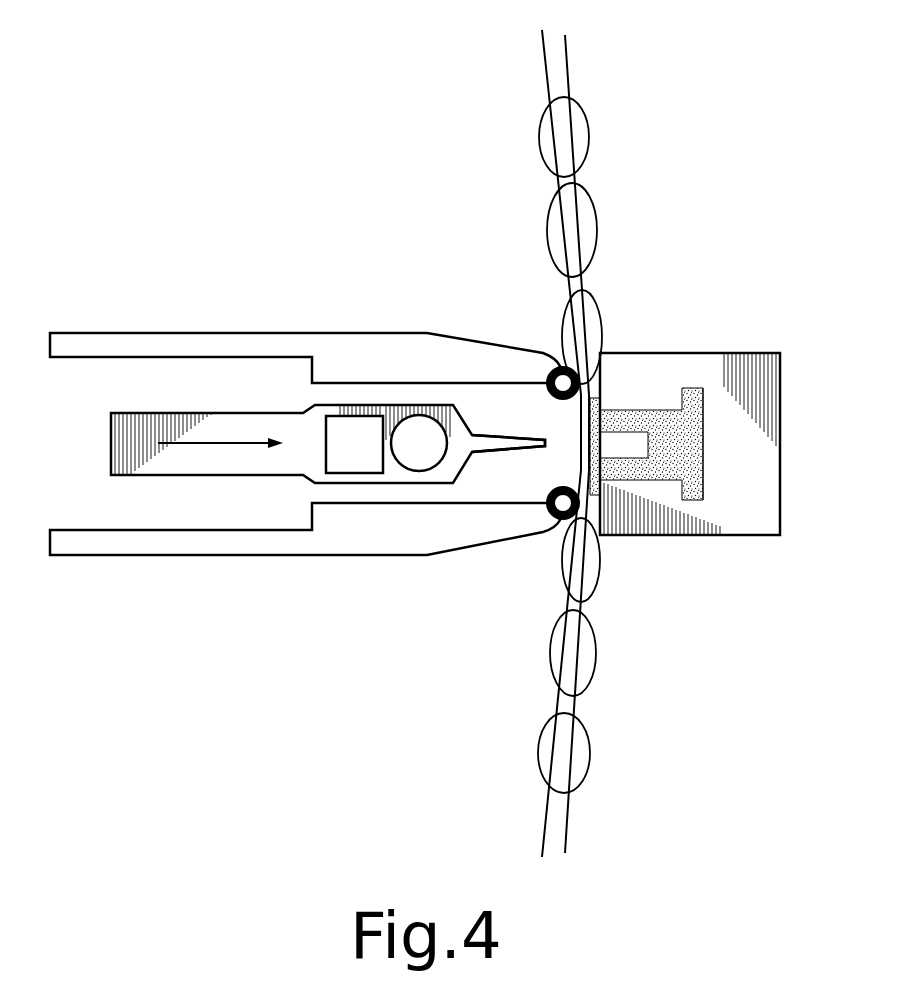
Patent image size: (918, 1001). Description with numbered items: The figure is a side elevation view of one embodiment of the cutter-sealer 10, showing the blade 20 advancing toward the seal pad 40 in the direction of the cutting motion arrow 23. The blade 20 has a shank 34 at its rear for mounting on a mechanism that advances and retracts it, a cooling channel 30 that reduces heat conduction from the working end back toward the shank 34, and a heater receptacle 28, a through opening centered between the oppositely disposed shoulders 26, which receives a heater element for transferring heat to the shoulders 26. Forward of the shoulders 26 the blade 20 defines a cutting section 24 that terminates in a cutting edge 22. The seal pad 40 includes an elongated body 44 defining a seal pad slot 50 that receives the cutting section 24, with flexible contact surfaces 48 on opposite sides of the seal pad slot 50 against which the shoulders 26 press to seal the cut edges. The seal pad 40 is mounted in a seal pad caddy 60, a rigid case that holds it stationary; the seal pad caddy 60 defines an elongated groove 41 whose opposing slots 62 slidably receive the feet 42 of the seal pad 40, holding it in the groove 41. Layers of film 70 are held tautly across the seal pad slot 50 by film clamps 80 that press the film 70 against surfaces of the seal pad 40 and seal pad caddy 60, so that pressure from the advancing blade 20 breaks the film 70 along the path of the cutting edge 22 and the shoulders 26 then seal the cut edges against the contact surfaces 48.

The cutter-sealer 10 is at (84, 98).
The blade 20 is at (111, 437).
The cutting edge 22 is at (548, 446).
The cutting motion arrow 23 is at (223, 443).
The cutting section 24 is at (500, 452).
The shoulders 26 is at (470, 430).
The heater receptacle 28 is at (420, 443).
The cooling channel 30 is at (326, 440).
The shank 34 is at (133, 475).
The seal pad 40 is at (665, 418).
The elongated groove 41 is at (703, 405).
The feet 42 is at (697, 388).
The elongated body 44 is at (600, 410).
The contact surfaces 48 is at (620, 410).
The seal pad slot 50 is at (627, 445).
The seal pad caddy 60 is at (780, 392).
The slots 62 is at (703, 457).
The film 70 is at (545, 68).
The film clamps 80 is at (507, 347).